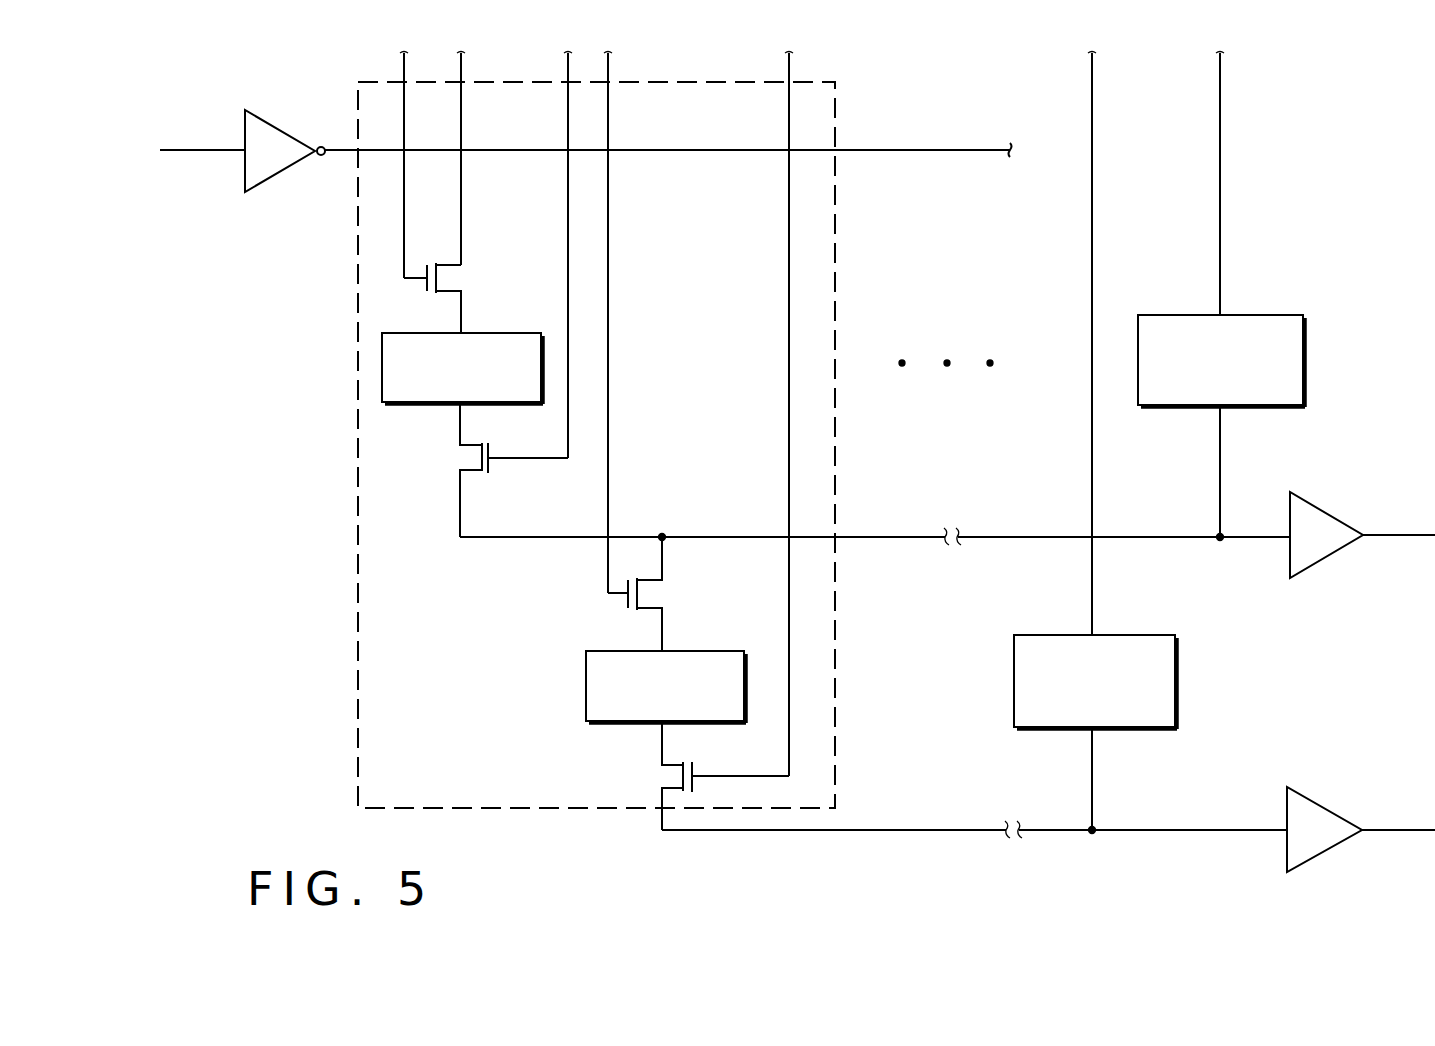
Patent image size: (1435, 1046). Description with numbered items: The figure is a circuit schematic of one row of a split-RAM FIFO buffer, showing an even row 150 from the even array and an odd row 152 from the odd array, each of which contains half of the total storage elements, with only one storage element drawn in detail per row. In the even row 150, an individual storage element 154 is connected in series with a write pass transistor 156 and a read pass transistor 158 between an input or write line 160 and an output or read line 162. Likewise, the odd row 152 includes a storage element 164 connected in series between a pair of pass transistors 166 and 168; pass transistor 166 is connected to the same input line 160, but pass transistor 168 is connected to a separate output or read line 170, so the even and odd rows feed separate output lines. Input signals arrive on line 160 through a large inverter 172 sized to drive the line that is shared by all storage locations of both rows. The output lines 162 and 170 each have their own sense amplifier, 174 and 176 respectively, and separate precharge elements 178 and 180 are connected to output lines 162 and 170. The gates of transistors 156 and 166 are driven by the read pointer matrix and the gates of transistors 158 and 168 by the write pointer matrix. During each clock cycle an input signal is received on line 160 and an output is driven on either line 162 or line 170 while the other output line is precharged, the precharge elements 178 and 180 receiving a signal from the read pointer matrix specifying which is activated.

The even row 150 is at (332, 393).
The odd row 152 is at (443, 692).
The storage element 154 is at (482, 333).
The write pass transistor 156 is at (461, 268).
The read pass transistor 158 is at (468, 472).
The input line 160 is at (190, 152).
The output line 162 is at (497, 539).
The storage element 164 is at (586, 700).
The pass transistor 166 is at (653, 607).
The pass transistor 168 is at (672, 770).
The output line 170 is at (869, 832).
The inverter 172 is at (277, 130).
The sense amplifier 174 is at (1347, 501).
The sense amplifier 176 is at (1319, 801).
The precharge element 178 is at (1275, 315).
The precharge element 180 is at (1172, 653).